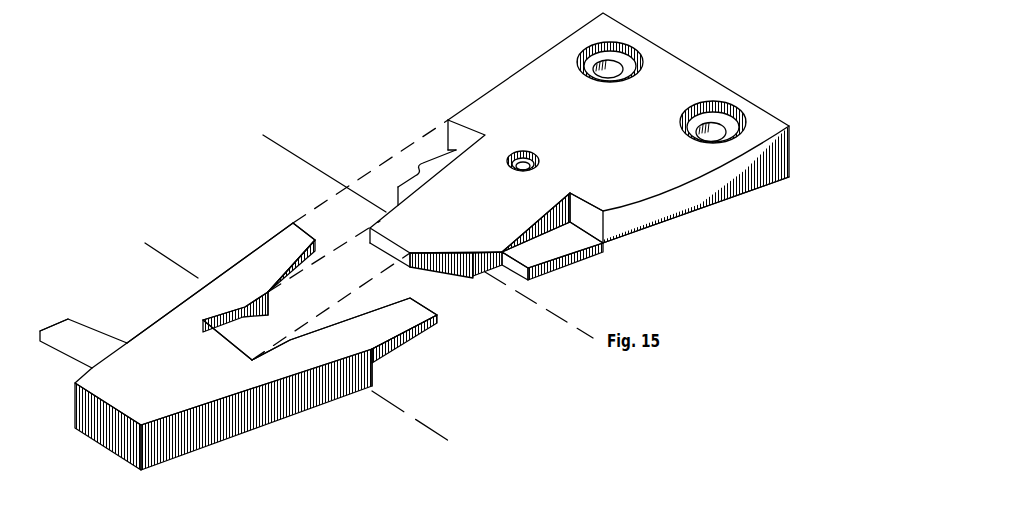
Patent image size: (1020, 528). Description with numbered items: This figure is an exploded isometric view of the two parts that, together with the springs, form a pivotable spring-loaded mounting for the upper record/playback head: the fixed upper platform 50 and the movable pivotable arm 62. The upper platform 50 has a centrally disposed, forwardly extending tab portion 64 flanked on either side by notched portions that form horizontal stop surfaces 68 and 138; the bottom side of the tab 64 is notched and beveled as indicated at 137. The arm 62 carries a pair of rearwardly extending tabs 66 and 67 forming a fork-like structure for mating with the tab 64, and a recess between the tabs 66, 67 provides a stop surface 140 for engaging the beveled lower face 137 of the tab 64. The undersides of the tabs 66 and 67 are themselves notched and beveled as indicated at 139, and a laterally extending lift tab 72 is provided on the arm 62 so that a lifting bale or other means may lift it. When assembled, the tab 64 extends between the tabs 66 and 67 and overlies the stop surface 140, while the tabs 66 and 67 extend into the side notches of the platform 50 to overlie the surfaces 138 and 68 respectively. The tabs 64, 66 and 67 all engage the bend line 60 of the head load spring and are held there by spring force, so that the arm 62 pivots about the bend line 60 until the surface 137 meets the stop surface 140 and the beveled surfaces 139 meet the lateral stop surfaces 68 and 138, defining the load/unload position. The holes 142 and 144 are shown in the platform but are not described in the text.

The upper platform 50 is at (680, 58).
The bend line 60 is at (287, 143).
The pivotable arm 62 is at (115, 452).
The tab portion 64 is at (457, 207).
The rearwardly extending tab 66 is at (281, 240).
The rearwardly extending tab 67 is at (405, 312).
The horizontal stop surface 68 is at (568, 247).
The lift tab 72 is at (70, 318).
The beveled lower face 137 is at (434, 260).
The horizontal stop surface 138 is at (443, 162).
The beveled surface 139 is at (305, 254).
The stop surface 140 is at (258, 335).
The counterbored hole 142 is at (623, 43).
The counterbored hole 144 is at (737, 109).